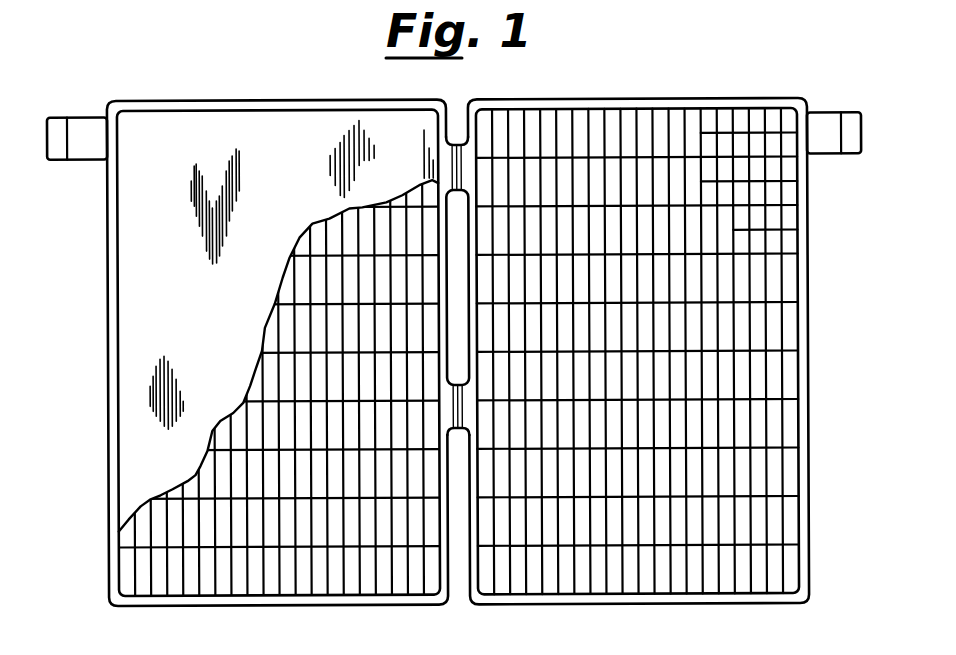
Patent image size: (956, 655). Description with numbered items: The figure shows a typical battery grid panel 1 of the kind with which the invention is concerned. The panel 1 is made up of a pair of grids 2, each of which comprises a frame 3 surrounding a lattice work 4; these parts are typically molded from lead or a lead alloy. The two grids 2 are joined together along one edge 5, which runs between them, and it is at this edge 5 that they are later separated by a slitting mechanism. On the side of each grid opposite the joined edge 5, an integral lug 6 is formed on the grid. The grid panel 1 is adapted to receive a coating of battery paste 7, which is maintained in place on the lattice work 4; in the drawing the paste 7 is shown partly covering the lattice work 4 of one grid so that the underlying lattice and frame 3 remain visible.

The battery grid panel 1 is at (643, 62).
The grids 2 is at (250, 99).
The frame 3 is at (484, 381).
The lattice work 4 is at (767, 337).
The edge 5 is at (459, 598).
The lug 6 is at (82, 147).
The battery paste 7 is at (178, 122).